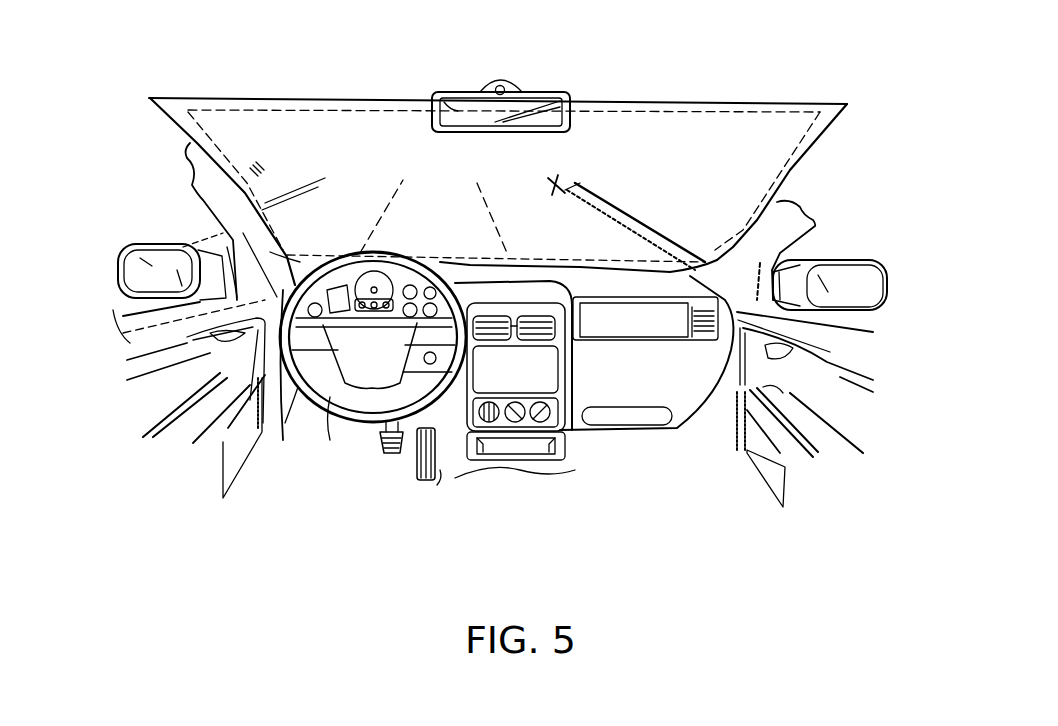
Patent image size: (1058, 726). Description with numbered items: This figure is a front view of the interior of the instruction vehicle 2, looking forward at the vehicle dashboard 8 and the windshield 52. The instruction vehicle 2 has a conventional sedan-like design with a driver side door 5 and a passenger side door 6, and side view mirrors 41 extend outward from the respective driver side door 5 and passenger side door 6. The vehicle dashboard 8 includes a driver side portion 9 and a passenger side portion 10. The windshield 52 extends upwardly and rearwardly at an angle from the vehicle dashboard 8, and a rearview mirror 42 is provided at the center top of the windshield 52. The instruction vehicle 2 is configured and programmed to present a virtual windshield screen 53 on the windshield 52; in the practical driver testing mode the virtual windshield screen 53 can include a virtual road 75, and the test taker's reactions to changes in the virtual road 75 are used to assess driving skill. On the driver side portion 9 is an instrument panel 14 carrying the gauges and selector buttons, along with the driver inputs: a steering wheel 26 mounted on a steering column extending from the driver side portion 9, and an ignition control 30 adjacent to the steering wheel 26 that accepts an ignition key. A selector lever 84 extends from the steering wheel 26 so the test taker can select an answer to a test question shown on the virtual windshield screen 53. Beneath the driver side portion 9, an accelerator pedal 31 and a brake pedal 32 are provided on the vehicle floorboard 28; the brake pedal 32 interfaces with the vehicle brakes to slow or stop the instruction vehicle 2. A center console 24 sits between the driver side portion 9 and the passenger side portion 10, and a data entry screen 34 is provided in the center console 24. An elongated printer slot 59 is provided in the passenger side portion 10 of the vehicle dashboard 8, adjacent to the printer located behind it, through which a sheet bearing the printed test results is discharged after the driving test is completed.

The instruction vehicle 2 is at (255, 170).
The driver side door 5 is at (140, 345).
The passenger side door 6 is at (830, 353).
The vehicle dashboard 8 is at (590, 273).
The driver side portion 9 is at (235, 236).
The passenger side portion 10 is at (660, 290).
The instrument panel 14 is at (410, 262).
The center console 24 is at (557, 467).
The steering wheel 26 is at (333, 420).
The vehicle floorboard 28 is at (437, 468).
The ignition control 30 is at (430, 338).
The accelerator pedal 31 is at (428, 480).
The brake pedal 32 is at (390, 450).
The data entry screen 34 is at (535, 372).
The side view mirrors 41 is at (130, 263).
The rearview mirror 42 is at (448, 104).
The windshield 52 is at (737, 106).
The virtual windshield screen 53 is at (790, 166).
The printer slot 59 is at (650, 417).
The virtual road 75 is at (555, 205).
The selector lever 84 is at (430, 263).